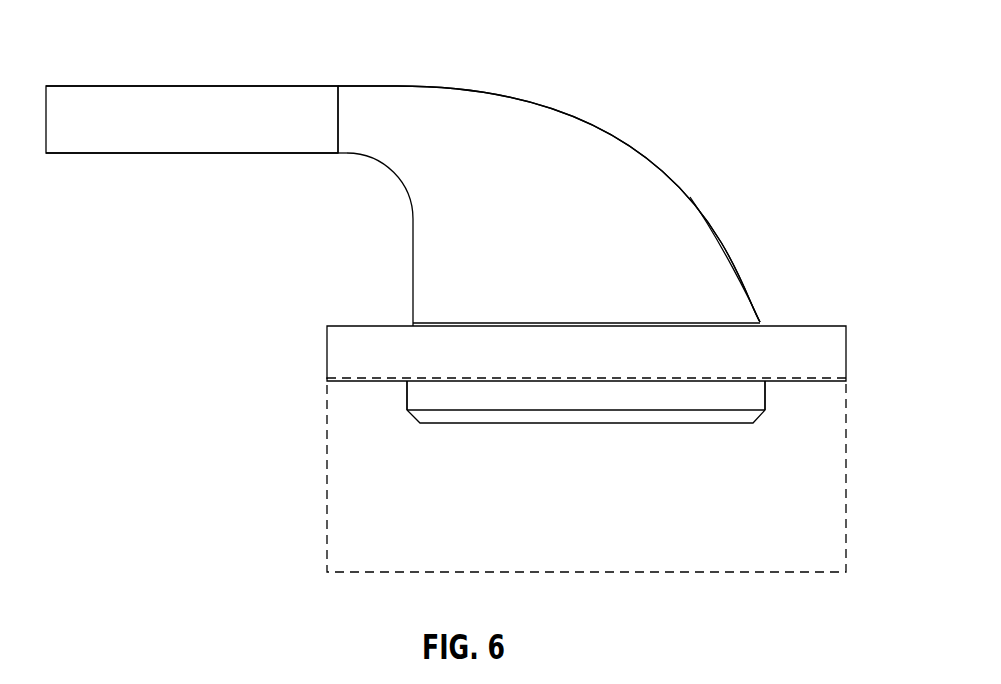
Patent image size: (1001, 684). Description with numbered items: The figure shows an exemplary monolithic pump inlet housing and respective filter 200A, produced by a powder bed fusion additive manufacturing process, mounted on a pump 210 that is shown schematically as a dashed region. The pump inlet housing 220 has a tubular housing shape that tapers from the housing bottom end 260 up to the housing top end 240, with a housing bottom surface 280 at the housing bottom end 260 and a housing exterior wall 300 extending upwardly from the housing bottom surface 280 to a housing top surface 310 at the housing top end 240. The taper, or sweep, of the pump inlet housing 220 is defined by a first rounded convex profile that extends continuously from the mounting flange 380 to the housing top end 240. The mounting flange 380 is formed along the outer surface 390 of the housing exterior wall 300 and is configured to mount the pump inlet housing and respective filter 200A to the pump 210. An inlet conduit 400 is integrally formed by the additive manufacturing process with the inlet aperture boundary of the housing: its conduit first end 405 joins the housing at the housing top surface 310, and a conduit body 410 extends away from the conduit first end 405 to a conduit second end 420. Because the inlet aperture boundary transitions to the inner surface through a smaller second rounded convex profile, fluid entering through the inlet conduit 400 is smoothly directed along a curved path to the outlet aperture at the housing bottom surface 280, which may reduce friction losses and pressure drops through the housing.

The pump inlet housing and respective filter 200A is at (772, 103).
The pump 210 is at (608, 489).
The pump inlet housing 220 is at (717, 267).
The housing top end 240 is at (582, 120).
The housing bottom end 260 is at (405, 386).
The housing bottom surface 280 is at (457, 424).
The housing exterior wall 300 is at (692, 200).
The housing top surface 310 is at (418, 87).
The mounting flange 380 is at (846, 352).
The outer surface 390 is at (765, 383).
The inlet conduit 400 is at (240, 86).
The conduit first end 405 is at (345, 153).
The conduit body 410 is at (105, 86).
The conduit second end 420 is at (100, 153).